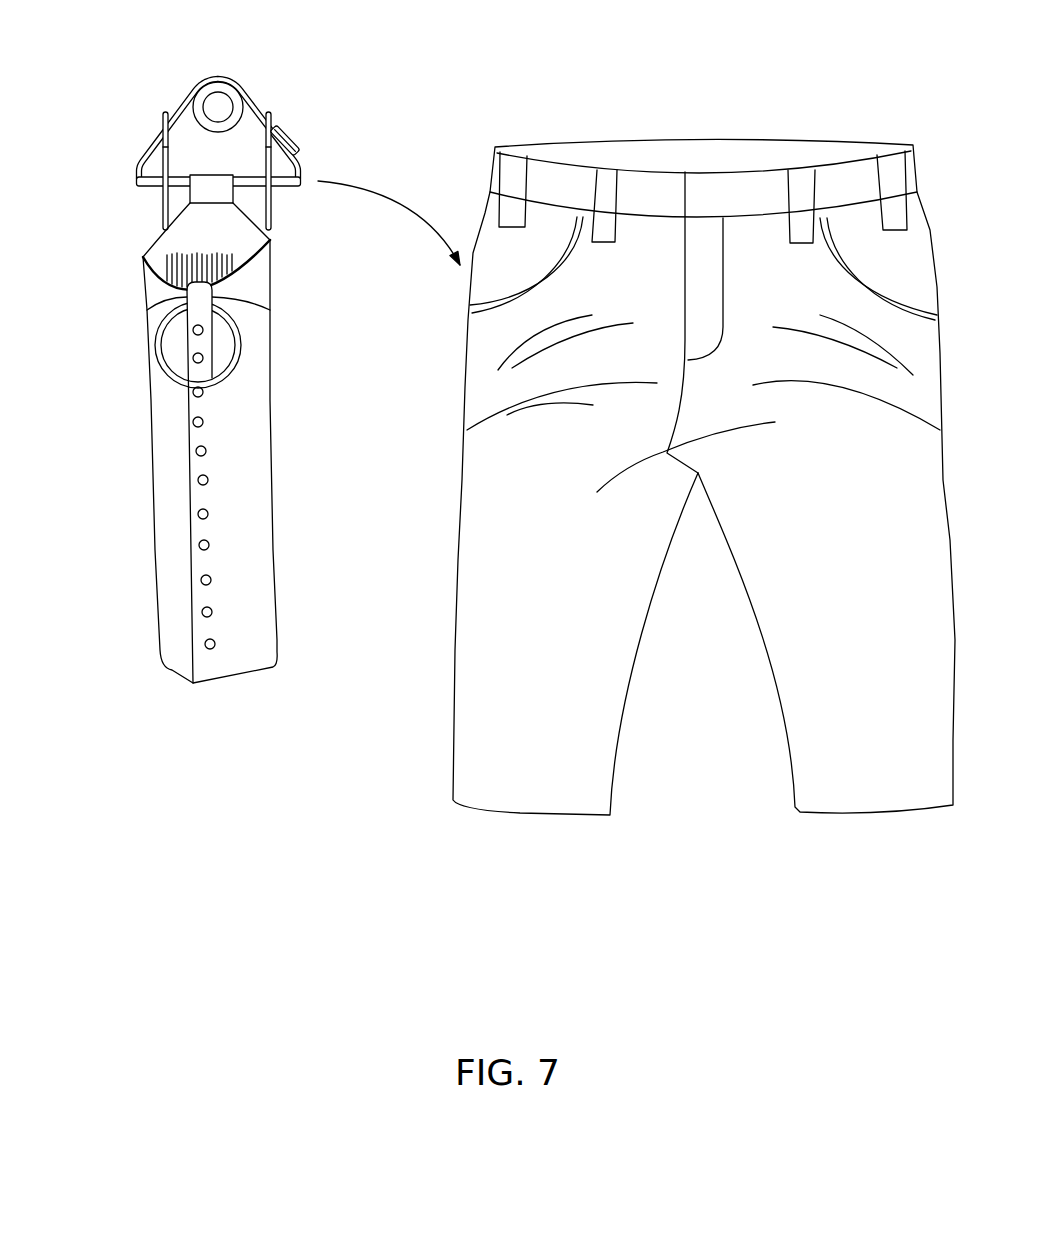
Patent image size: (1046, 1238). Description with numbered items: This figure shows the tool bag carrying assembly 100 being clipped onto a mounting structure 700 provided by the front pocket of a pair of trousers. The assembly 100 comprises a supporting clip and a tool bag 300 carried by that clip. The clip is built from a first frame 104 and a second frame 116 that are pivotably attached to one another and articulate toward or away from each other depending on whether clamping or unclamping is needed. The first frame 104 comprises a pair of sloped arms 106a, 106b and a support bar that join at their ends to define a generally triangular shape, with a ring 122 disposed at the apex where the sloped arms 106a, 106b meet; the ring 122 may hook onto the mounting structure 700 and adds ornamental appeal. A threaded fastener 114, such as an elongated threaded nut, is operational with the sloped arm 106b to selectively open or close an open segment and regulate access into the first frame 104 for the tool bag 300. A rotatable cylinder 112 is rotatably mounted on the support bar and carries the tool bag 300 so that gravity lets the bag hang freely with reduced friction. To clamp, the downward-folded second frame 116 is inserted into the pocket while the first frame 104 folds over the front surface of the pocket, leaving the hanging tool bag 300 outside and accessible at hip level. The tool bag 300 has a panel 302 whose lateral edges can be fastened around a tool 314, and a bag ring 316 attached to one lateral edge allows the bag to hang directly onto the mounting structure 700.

The tool bag carrying assembly 100 is at (210, 350).
The first frame 104 is at (209, 135).
The sloped arm 106a is at (142, 153).
The sloped arm 106b is at (257, 107).
The rotatable cylinder 112 is at (147, 185).
The threaded fastener 114 is at (288, 142).
The second frame 116 is at (276, 205).
The ring 122 is at (215, 98).
The tool bag 300 is at (212, 429).
The panel 302 is at (255, 507).
The tool 314 is at (218, 257).
The bag ring 316 is at (228, 372).
The mounting structure 700 is at (495, 315).